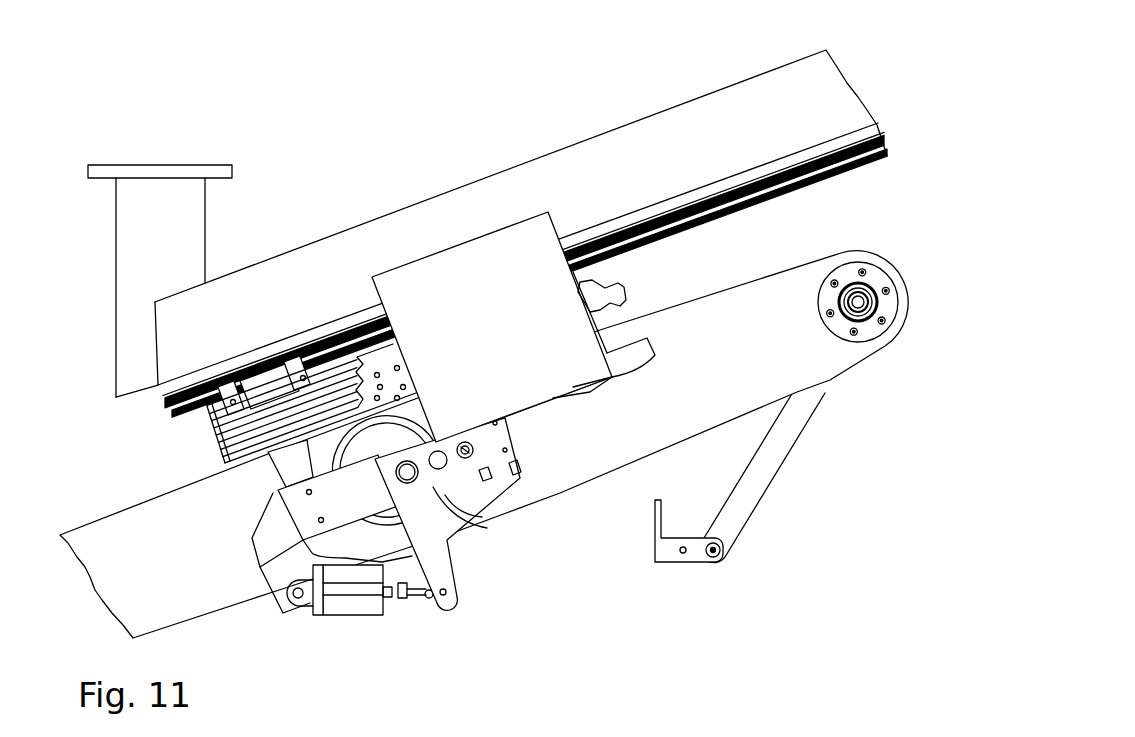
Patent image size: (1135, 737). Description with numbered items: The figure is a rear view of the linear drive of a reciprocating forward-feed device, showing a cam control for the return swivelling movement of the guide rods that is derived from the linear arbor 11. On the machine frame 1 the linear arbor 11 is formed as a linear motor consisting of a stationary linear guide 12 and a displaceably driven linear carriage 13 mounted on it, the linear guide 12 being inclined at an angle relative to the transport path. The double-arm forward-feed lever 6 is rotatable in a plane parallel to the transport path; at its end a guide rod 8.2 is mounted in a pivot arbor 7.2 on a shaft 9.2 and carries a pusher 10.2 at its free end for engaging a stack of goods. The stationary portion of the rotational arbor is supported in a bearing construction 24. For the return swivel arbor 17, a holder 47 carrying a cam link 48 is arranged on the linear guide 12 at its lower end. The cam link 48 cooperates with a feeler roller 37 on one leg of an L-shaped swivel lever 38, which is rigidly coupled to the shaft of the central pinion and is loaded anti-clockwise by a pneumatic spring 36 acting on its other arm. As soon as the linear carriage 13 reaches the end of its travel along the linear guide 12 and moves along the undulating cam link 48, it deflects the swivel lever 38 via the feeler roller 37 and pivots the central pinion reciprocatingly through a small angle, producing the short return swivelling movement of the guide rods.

The machine frame 1 is at (160, 186).
The forward-feed lever 6 is at (528, 512).
The pivot arbor 7.2 is at (863, 310).
The guide rod 8.2 is at (747, 512).
The shaft 9.2 is at (843, 324).
The pusher 10.2 is at (655, 530).
The linear arbor 11 is at (568, 223).
The linear guide 12 is at (697, 110).
The linear carriage 13 is at (343, 377).
The return swivel arbor 17 is at (415, 486).
The bearing construction 24 is at (277, 587).
The pneumatic spring 36 is at (347, 600).
The feeler roller 37 is at (470, 460).
The swivel lever 38 is at (440, 606).
The holder 47 is at (457, 257).
The cam link 48 is at (640, 348).